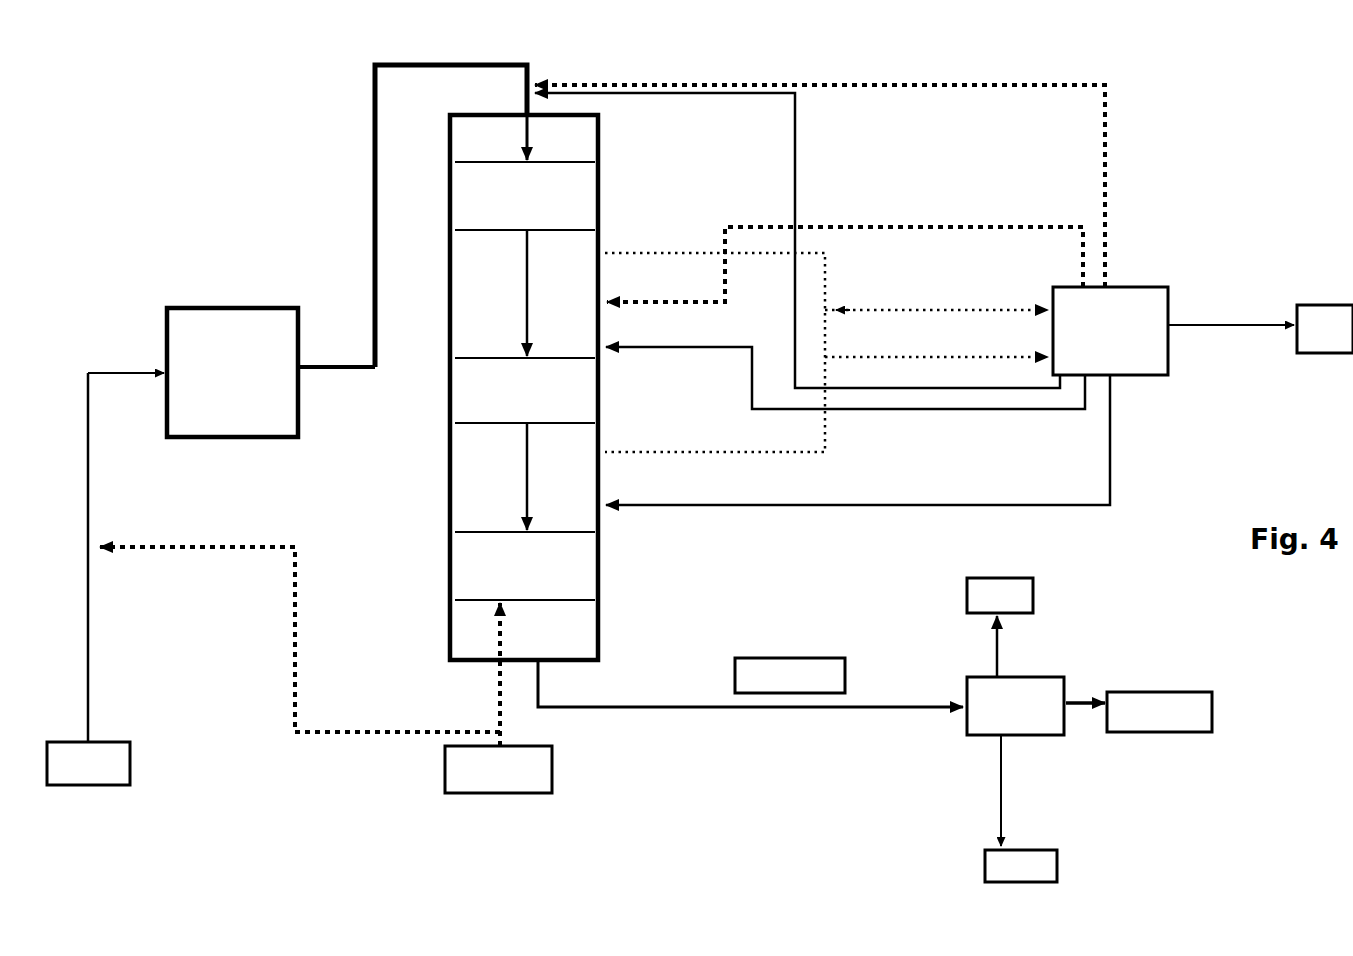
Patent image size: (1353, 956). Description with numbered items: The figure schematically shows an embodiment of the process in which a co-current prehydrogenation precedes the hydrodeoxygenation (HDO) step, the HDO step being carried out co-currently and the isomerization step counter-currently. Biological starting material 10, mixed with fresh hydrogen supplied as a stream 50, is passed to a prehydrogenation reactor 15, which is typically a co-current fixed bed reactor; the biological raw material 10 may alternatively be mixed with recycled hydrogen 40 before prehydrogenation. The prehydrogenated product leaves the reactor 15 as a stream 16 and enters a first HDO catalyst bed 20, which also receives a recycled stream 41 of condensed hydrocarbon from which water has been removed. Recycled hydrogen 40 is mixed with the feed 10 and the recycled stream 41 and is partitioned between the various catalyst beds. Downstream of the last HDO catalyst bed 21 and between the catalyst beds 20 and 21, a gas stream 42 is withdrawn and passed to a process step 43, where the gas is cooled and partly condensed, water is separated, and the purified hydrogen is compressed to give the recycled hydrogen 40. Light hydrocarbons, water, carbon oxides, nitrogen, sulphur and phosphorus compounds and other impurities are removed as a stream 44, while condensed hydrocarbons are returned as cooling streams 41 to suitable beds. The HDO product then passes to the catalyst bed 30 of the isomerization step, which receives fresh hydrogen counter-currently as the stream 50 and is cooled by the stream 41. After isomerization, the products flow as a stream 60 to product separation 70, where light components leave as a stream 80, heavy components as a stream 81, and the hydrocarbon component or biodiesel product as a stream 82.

The biological starting material 10 is at (88, 579).
The prehydrogenation reactor 15 is at (231, 372).
The prehydrogenated product stream 16 is at (368, 130).
The first HDO catalyst bed 20 is at (525, 217).
The last HDO catalyst bed 21 is at (525, 410).
The catalyst bed of the isomerization step 30 is at (525, 600).
The recycled hydrogen 40 is at (1005, 90).
The recycled stream 41 is at (950, 392).
The gas stream 42 is at (885, 352).
The process step 43 is at (1110, 331).
The impurity stream 44 is at (1260, 329).
The fresh hydrogen stream 50 is at (326, 670).
The isomerized product stream 60 is at (750, 682).
The product separation 70 is at (1015, 706).
The light components stream 80 is at (1000, 627).
The heavy components stream 81 is at (1021, 808).
The hydrocarbon component/biodiesel product stream 82 is at (1139, 712).